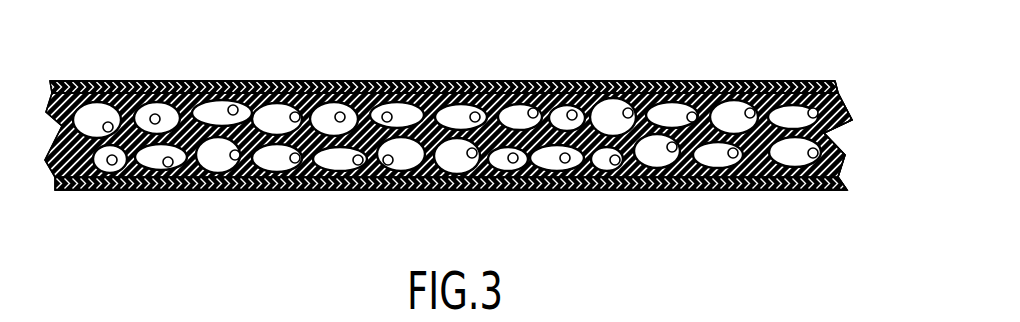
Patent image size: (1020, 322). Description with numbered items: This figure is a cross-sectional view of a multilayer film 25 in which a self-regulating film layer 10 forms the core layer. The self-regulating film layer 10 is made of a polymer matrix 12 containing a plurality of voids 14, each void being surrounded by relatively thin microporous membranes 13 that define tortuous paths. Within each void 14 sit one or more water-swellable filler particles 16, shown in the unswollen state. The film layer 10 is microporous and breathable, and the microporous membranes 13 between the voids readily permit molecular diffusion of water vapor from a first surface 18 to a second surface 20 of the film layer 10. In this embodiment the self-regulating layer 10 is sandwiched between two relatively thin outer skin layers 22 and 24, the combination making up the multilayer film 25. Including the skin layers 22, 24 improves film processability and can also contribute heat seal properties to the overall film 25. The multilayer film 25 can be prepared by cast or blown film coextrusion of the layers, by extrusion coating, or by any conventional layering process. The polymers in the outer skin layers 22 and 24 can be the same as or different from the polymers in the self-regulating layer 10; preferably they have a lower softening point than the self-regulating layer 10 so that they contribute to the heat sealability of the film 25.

The self-regulating film layer 10 is at (843, 177).
The polymer matrix 12 is at (775, 86).
The microporous membranes 13 is at (442, 127).
The voids 14 is at (548, 164).
The water-swellable filler particles 16 is at (582, 171).
The first surface 18 is at (80, 82).
The second surface 20 is at (128, 190).
The outer skin layer 22 is at (240, 82).
The outer skin layer 24 is at (252, 182).
The multilayer film 25 is at (836, 84).